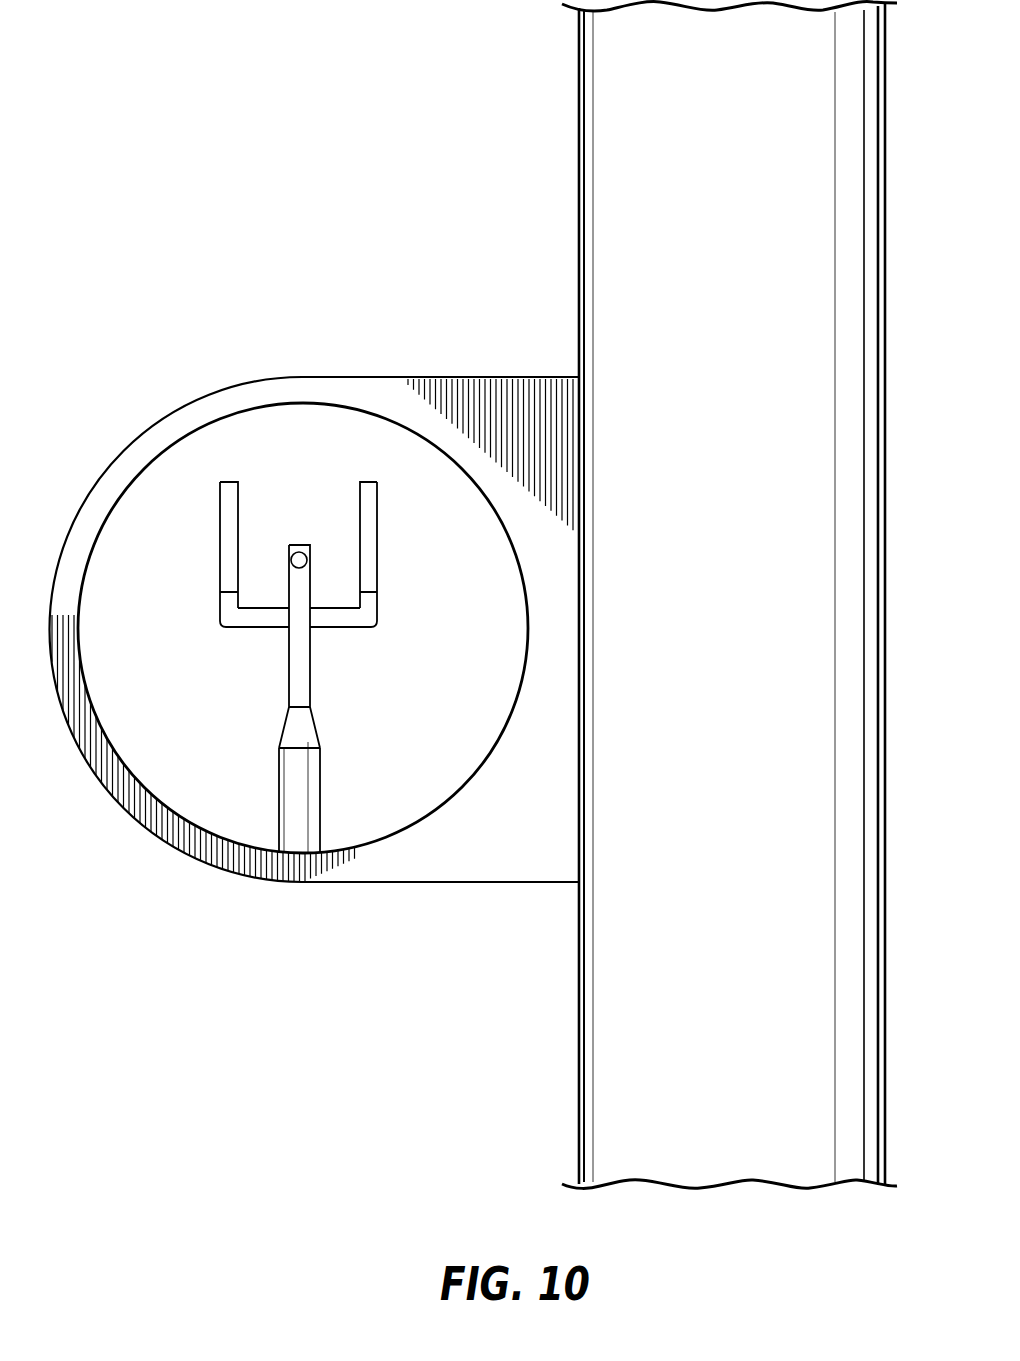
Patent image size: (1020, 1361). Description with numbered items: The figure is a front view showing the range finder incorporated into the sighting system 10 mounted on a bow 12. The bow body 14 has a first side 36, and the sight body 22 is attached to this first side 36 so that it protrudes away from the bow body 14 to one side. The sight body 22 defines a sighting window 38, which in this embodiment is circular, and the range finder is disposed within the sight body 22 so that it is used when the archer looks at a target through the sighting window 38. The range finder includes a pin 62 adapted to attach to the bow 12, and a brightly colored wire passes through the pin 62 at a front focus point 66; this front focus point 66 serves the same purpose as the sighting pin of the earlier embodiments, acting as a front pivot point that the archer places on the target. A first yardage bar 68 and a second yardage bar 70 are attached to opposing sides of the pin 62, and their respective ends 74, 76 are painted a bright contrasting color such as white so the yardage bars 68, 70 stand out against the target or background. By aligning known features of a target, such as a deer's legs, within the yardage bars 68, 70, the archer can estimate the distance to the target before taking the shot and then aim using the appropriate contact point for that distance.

The sighting system 10 is at (315, 528).
The bow 12 is at (706, 595).
The bow body 14 is at (610, 212).
The sight body 22 is at (382, 393).
The first side 36 is at (578, 1010).
The sighting window 38 is at (471, 630).
The pin 62 is at (331, 670).
The front focus point 66 is at (298, 556).
The first yardage bar 68 is at (287, 561).
The second yardage bar 70 is at (366, 620).
The end of first yardage bar 74 is at (218, 508).
The end of second yardage bar 76 is at (378, 506).